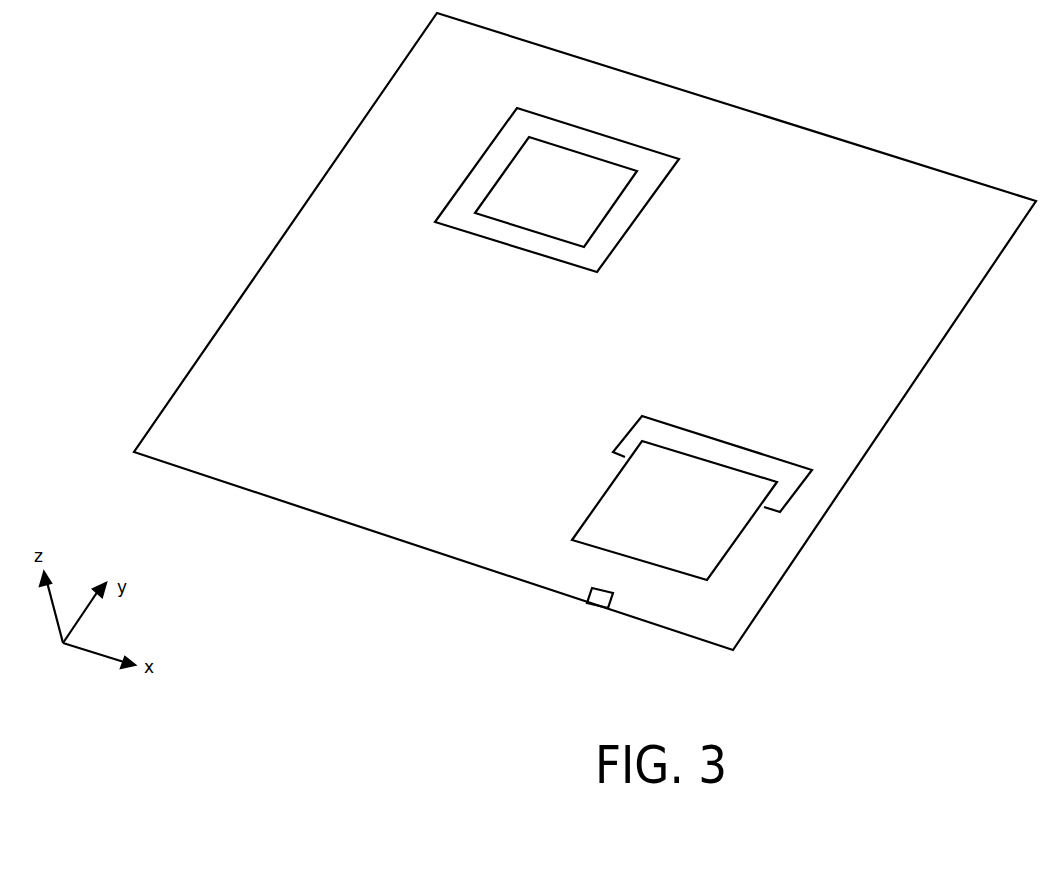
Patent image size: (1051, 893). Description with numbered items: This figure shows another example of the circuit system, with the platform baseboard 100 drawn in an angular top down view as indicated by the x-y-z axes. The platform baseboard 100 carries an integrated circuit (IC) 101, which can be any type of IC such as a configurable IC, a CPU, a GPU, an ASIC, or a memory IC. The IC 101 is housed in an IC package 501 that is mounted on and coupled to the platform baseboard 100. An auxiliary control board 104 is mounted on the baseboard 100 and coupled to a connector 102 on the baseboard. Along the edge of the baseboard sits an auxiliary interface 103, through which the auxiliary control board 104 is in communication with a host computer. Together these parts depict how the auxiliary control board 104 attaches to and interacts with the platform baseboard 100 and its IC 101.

The platform baseboard 100 is at (376, 90).
The IC package 501 is at (477, 168).
The integrated circuit (IC) 101 is at (577, 203).
The connector 102 is at (708, 445).
The auxiliary control board 104 is at (593, 508).
The auxiliary interface 103 is at (595, 607).